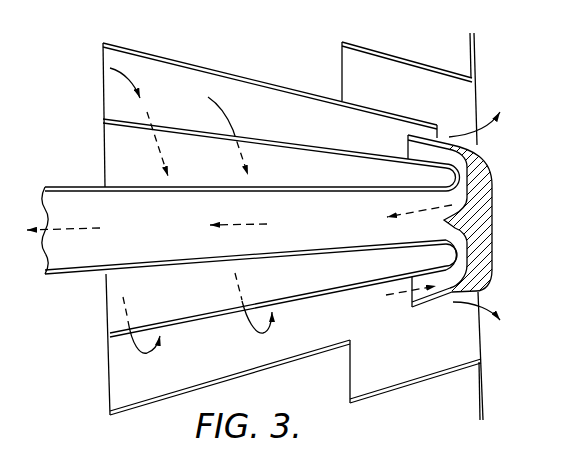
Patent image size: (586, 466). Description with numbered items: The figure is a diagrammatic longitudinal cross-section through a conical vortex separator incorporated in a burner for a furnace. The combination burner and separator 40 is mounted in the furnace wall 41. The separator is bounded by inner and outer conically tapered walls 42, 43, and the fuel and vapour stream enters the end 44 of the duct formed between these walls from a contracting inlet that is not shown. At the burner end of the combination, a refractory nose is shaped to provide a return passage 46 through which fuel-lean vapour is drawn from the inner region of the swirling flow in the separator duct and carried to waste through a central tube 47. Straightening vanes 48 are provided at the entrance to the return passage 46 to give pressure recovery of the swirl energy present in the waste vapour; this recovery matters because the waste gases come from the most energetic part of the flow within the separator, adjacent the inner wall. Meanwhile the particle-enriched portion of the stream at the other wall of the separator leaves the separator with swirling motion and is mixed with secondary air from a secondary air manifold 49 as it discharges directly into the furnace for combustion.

The combination burner and separator 40 is at (282, 84).
The furnace wall 41 is at (476, 52).
The inner conically tapered wall 42 is at (126, 123).
The outer conically tapered wall 43 is at (182, 62).
The end of the duct 44 is at (110, 58).
The return passage 46 is at (466, 181).
The central tube 47 is at (90, 276).
The straightening vanes 48 is at (401, 137).
The secondary air manifold 49 is at (405, 363).